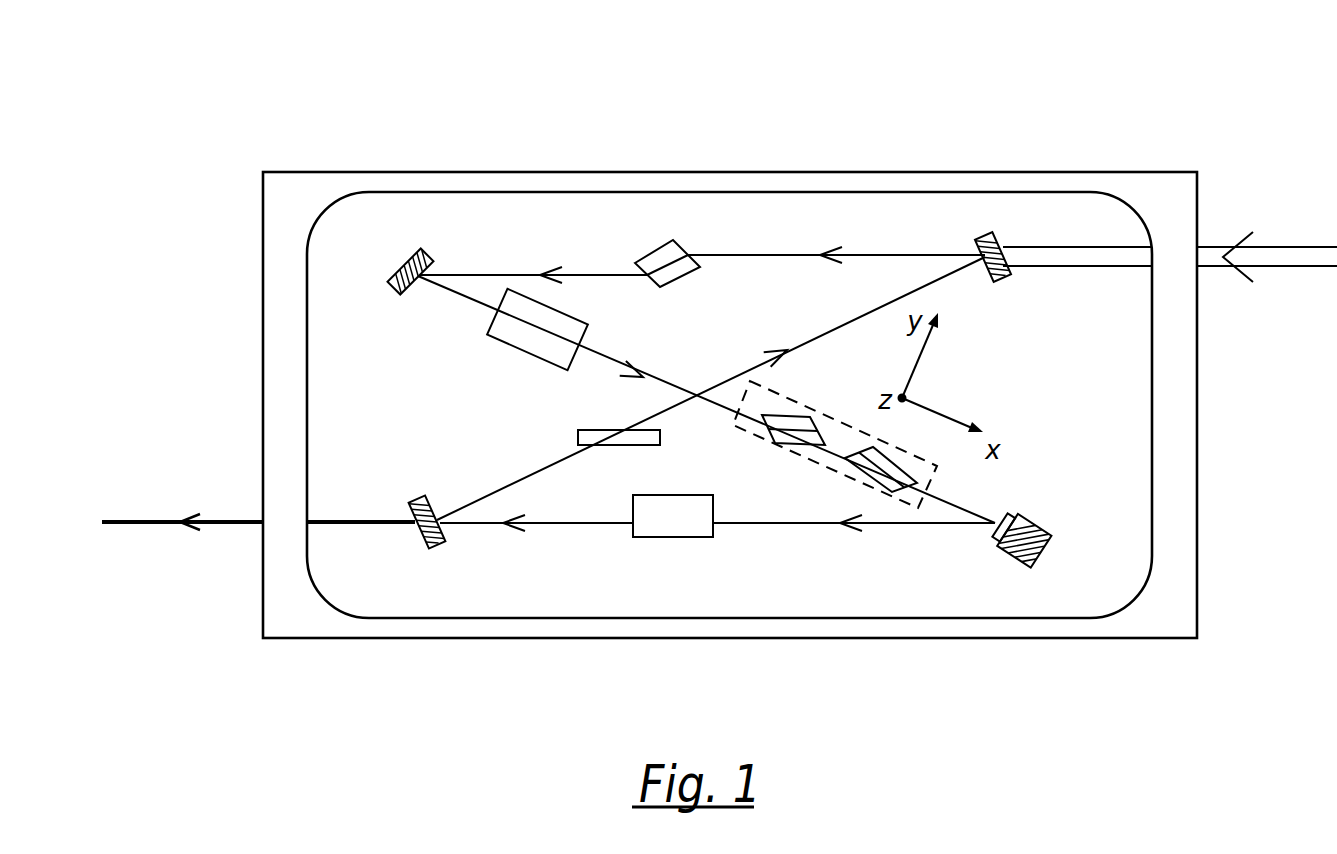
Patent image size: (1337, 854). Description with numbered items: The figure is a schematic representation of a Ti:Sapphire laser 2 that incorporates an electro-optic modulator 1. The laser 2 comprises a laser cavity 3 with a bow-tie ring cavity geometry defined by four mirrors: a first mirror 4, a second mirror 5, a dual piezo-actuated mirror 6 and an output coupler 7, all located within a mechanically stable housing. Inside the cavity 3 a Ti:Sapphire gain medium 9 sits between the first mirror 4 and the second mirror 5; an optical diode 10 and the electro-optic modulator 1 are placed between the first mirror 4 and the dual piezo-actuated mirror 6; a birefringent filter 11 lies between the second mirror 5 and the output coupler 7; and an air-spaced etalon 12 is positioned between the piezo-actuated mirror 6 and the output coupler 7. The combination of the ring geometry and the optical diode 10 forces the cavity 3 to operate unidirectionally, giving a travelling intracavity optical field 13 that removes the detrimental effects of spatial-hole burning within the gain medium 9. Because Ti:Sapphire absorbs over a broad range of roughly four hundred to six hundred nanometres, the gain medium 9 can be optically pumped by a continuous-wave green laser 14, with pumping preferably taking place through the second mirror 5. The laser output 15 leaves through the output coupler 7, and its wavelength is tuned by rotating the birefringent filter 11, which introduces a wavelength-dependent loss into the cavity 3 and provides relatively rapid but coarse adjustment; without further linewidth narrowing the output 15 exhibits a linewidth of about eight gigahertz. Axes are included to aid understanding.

The electro-optic modulator 1 is at (935, 470).
The Ti:Sapphire laser 2 is at (938, 136).
The laser cavity 3 is at (424, 391).
The first mirror 4 is at (401, 272).
The second mirror 5 is at (998, 241).
The dual piezo-actuated mirror 6 is at (1037, 525).
The output coupler 7 is at (418, 533).
The Ti:Sapphire gain medium 9 is at (682, 250).
The optical diode 10 is at (530, 357).
The birefringent filter 11 is at (578, 437).
The air-spaced etalon 12 is at (670, 538).
The travelling intracavity optical field 13 is at (875, 254).
The continuous-wave green laser 14 is at (1297, 246).
The laser output 15 is at (130, 524).